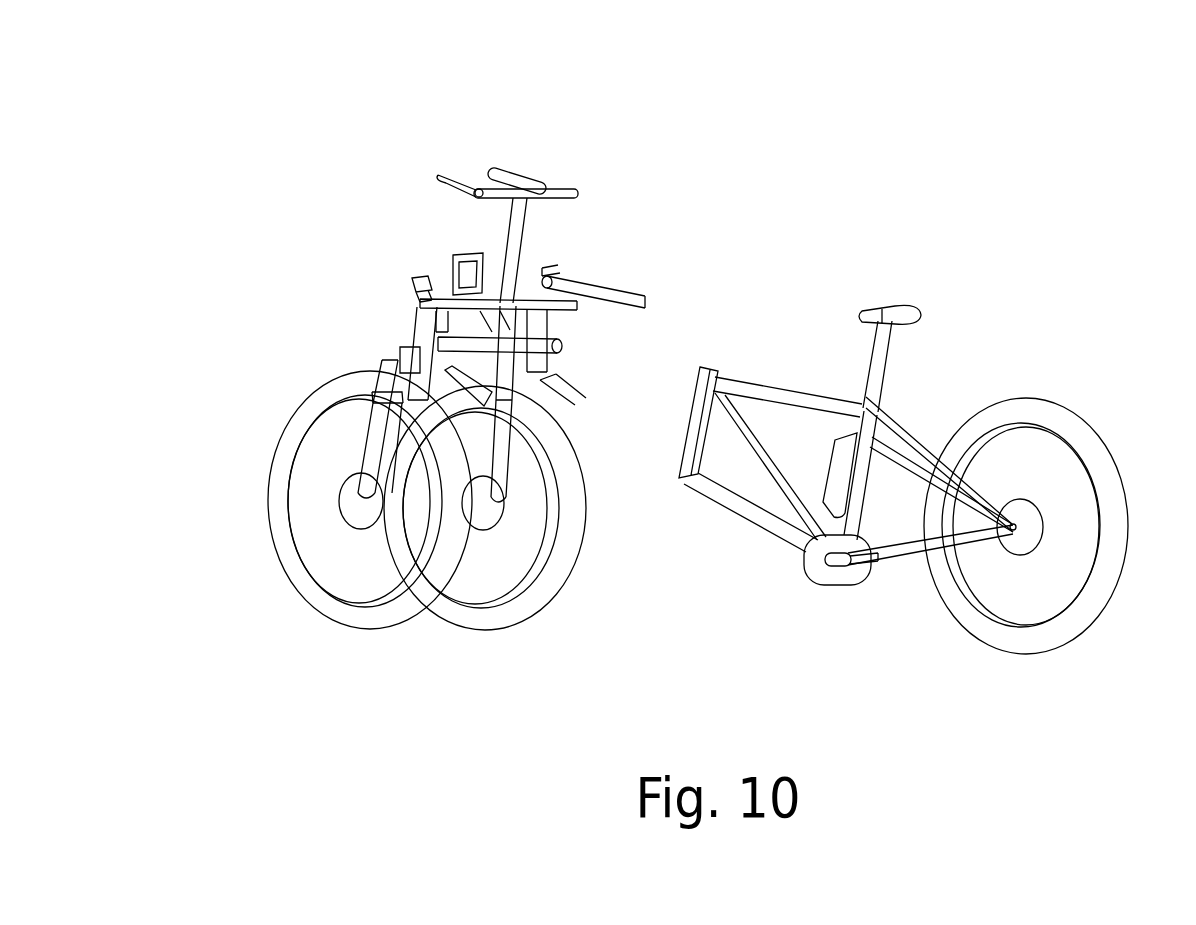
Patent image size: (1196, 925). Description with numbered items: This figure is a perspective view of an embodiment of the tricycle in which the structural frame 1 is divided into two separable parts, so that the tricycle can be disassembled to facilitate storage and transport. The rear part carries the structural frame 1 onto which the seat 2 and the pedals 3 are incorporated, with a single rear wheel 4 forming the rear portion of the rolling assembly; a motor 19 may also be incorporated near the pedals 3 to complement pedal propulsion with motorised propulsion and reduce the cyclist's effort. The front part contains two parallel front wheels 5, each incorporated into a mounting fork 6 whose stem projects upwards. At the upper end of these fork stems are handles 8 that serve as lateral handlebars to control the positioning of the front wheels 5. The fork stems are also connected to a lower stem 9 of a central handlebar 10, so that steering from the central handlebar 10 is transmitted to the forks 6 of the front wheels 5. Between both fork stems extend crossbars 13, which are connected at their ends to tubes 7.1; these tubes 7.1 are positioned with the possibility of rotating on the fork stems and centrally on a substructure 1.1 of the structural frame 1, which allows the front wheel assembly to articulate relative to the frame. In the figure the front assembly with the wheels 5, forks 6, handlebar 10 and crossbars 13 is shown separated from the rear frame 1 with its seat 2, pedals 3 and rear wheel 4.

The structural frame 1 is at (757, 393).
The substructure 1.1 is at (498, 372).
The seat 2 is at (905, 312).
The pedals 3 is at (870, 557).
The rear wheel 4 is at (1072, 435).
The front wheels 5 is at (495, 612).
The mounting forks 6 is at (372, 447).
The tubes 7.1 is at (420, 320).
The handles 8 is at (425, 287).
The lower stem 9 is at (507, 230).
The central handlebar 10 is at (545, 190).
The crossbars 13 is at (533, 342).
The motor 19 is at (832, 575).